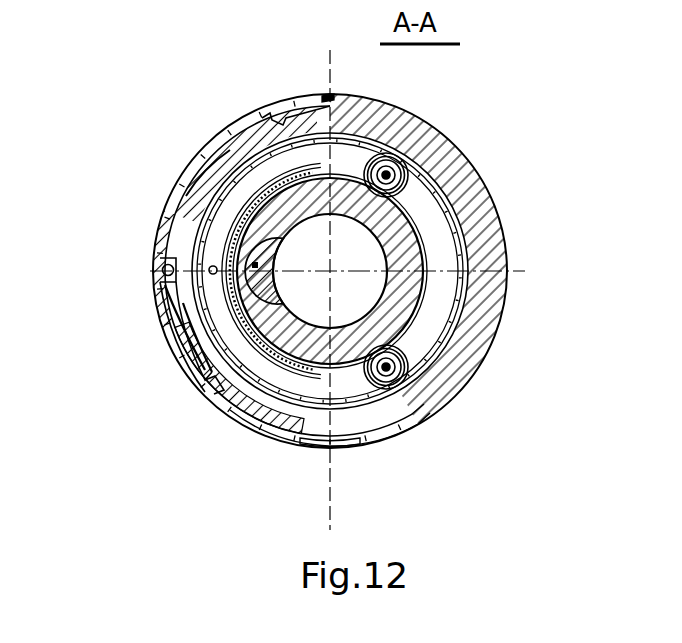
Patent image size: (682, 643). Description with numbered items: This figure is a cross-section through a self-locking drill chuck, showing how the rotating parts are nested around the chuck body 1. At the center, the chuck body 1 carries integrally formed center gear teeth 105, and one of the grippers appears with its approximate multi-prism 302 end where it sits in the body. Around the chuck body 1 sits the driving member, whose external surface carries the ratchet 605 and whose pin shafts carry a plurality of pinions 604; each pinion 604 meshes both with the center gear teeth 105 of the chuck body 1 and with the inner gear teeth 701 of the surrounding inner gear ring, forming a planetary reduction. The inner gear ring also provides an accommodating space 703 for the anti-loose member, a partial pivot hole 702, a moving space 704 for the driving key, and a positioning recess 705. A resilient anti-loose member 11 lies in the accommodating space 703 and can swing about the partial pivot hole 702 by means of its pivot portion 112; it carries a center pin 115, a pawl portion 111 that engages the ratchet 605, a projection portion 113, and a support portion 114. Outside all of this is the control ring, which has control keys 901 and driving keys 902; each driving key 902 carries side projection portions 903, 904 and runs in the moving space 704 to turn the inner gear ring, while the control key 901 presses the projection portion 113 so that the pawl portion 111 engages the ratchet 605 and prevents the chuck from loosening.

The chuck body 1 is at (402, 304).
The resilient anti-loose member 11 is at (182, 356).
The center gear teeth 105 is at (435, 287).
The pawl portion 111 is at (186, 196).
The pivot portion 112 is at (144, 240).
The projection portion 113 is at (187, 330).
The support portion 114 is at (200, 383).
The center pin 115 is at (160, 267).
The approximate multi-prism 302 is at (198, 150).
The pinion 604 is at (425, 370).
The ratchet 605 is at (232, 178).
The inner gear teeth 701 is at (432, 222).
The partial pivot hole 702 is at (166, 264).
The accommodating space for anti-loose member 703 is at (165, 285).
The moving space for driving key 704 is at (283, 123).
The positioning recess 705 is at (328, 93).
The control key 901 is at (183, 303).
The driving key 902 is at (270, 440).
The projection portion 903 is at (240, 413).
The projection portion 904 is at (337, 452).